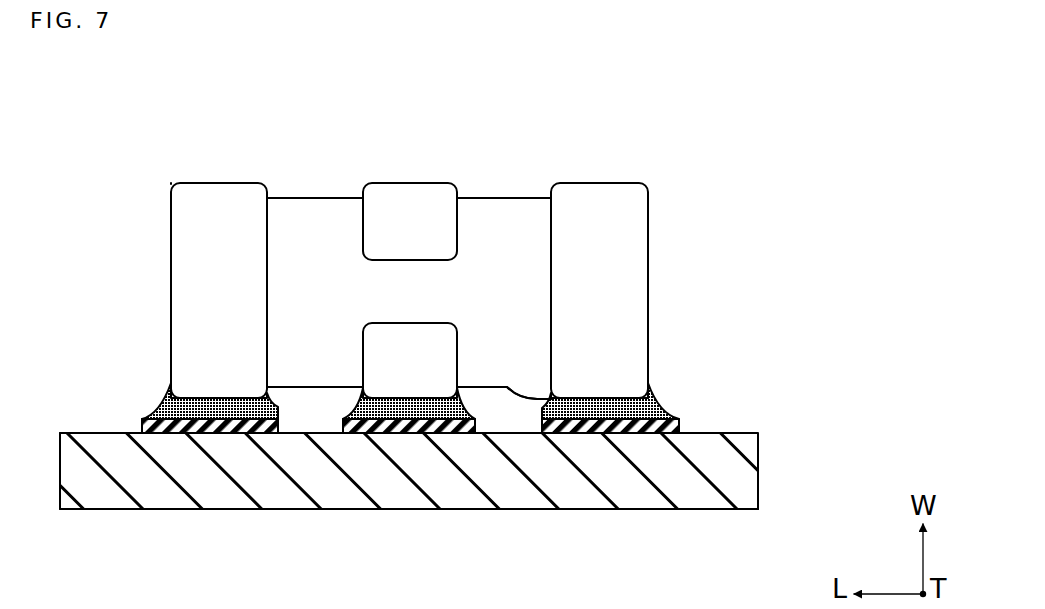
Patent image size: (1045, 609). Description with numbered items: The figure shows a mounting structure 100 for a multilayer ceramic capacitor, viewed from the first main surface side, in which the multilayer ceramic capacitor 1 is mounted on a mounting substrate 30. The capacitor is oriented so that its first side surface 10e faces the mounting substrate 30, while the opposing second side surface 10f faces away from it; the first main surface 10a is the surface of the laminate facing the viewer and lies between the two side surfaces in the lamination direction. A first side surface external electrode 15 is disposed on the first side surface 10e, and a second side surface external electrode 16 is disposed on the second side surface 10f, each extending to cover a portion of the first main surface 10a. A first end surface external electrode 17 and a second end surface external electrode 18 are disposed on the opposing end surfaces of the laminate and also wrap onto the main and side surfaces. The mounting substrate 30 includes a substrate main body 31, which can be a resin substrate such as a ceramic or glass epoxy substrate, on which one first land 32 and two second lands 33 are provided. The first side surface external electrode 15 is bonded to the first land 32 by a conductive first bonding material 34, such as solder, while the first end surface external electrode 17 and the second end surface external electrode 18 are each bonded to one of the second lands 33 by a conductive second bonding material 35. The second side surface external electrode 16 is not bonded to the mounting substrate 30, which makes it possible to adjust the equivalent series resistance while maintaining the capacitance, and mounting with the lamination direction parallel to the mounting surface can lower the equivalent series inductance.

The multilayer ceramic capacitor 1 is at (198, 160).
The mounting structure 100 is at (820, 127).
The first main surface 10a is at (503, 245).
The first side surface 10e is at (557, 398).
The second side surface 10f is at (300, 197).
The first side surface external electrode 15 is at (432, 333).
The second side surface external electrode 16 is at (388, 197).
The first end surface external electrode 17 is at (180, 282).
The second end surface external electrode 18 is at (637, 282).
The mounting substrate 30 is at (745, 522).
The substrate main body 31 is at (747, 483).
The first land 32 is at (427, 425).
The second land 33 is at (230, 425).
The first bonding material 34 is at (388, 413).
The second bonding material 35 is at (185, 413).